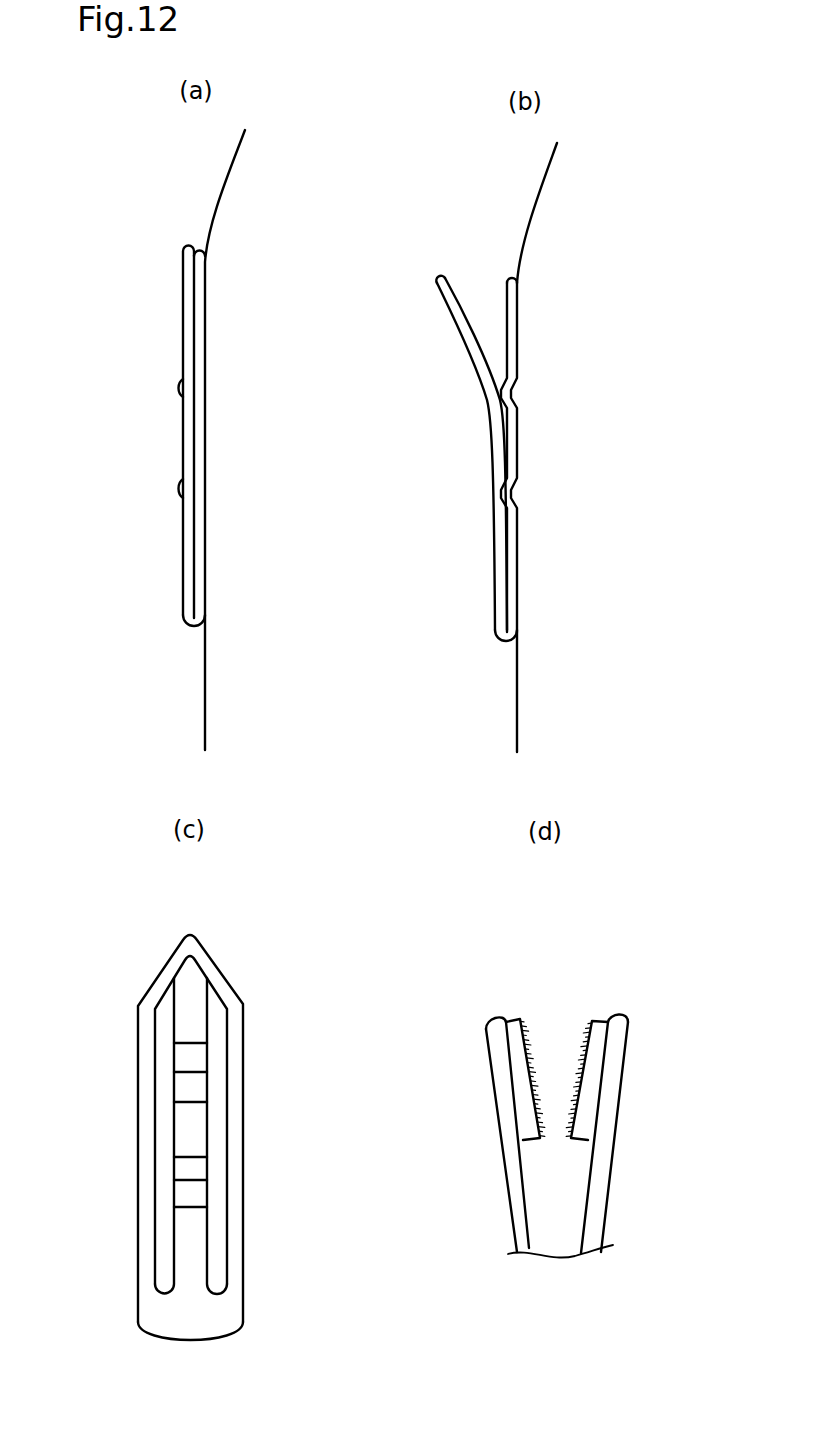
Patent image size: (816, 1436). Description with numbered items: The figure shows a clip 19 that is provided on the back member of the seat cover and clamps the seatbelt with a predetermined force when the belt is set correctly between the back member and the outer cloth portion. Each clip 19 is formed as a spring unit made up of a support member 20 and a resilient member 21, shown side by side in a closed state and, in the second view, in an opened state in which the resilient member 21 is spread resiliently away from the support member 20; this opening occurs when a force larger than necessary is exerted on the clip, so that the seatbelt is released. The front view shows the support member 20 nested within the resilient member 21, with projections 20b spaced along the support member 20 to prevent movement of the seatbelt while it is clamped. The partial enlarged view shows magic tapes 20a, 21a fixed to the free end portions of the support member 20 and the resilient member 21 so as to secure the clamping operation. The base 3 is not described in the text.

In FIG. 12A, the base member 3 is at (205, 700).
In FIG. 12B, the base member 3 is at (518, 693).
In FIG. 12A, the clip 19 is at (133, 320).
In FIG. 12B, the clip 19 is at (425, 322).
In FIG. 12C, the clip 19 is at (122, 1005).
In FIG. 12A, the support member 20 is at (199, 250).
In FIG. 12B, the support member 20 is at (512, 283).
In FIG. 12C, the support member 20 is at (190, 987).
In FIG. 12D, the support member 20 is at (617, 1075).
In FIG. 12D, the magic tape 20a is at (599, 1042).
In FIG. 12A, the projections 20b is at (181, 387).
In FIG. 12C, the projections 20b is at (183, 1085).
In FIG. 12A, the resilient member 21 is at (185, 445).
In FIG. 12B, the resilient member 21 is at (488, 438).
In FIG. 12C, the resilient member 21 is at (235, 1010).
In FIG. 12D, the resilient member 21 is at (504, 1104).
In FIG. 12D, the magic tape 21a is at (535, 1029).